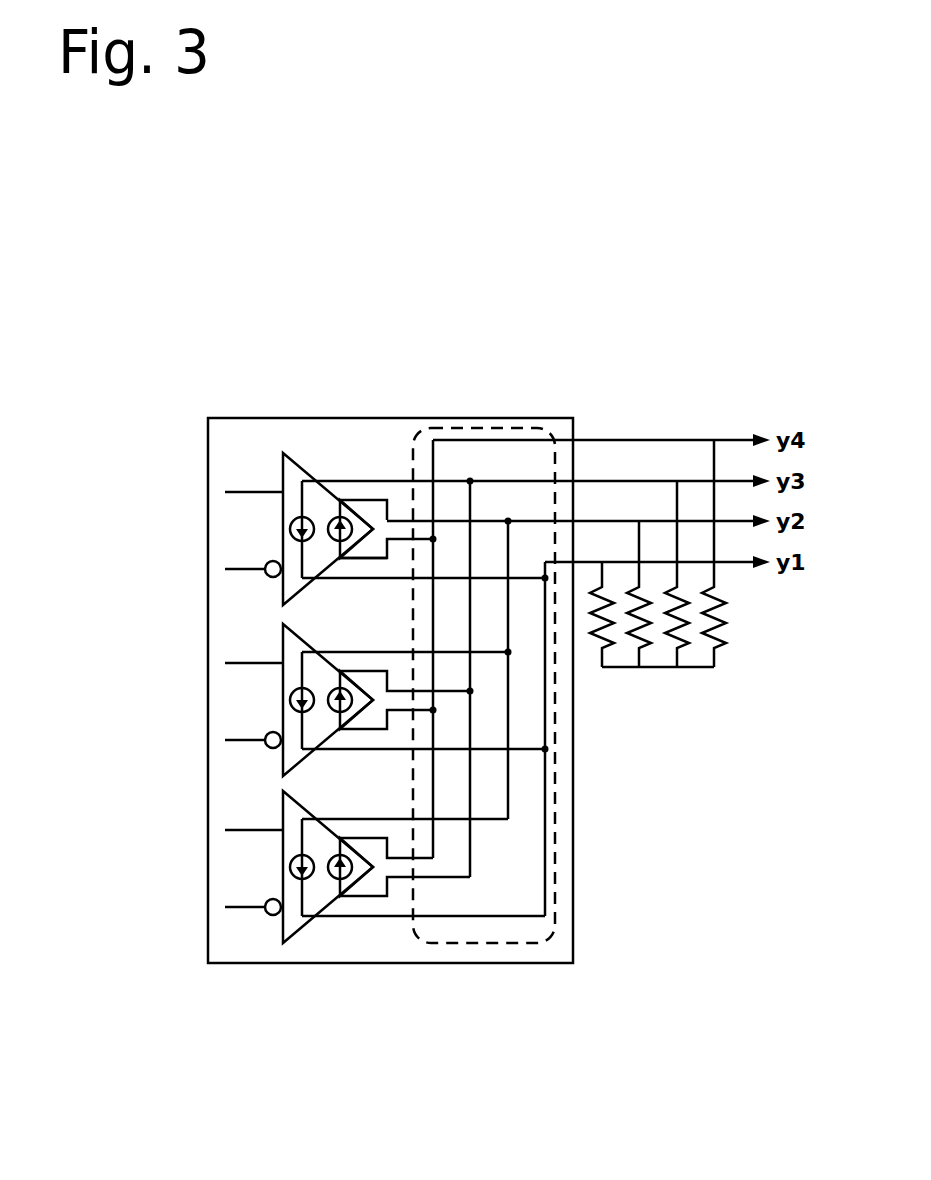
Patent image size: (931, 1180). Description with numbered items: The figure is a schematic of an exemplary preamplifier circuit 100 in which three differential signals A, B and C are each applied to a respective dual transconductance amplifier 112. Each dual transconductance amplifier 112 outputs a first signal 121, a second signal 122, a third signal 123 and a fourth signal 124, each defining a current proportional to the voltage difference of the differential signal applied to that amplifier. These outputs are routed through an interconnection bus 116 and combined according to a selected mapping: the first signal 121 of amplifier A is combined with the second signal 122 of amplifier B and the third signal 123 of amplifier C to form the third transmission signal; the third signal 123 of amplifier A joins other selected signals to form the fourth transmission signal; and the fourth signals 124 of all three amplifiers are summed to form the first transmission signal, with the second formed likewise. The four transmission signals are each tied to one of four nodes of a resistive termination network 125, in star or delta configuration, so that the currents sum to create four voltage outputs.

The output driver circuit 100 is at (192, 353).
The dual transconductance amplifier 112 is at (283, 470).
The output bus 116 is at (552, 445).
The first signal 121 is at (357, 481).
The second signal 122 is at (373, 500).
The third signal 123 is at (387, 560).
The fourth signal 124 is at (360, 580).
The resistive termination network 125 is at (753, 668).